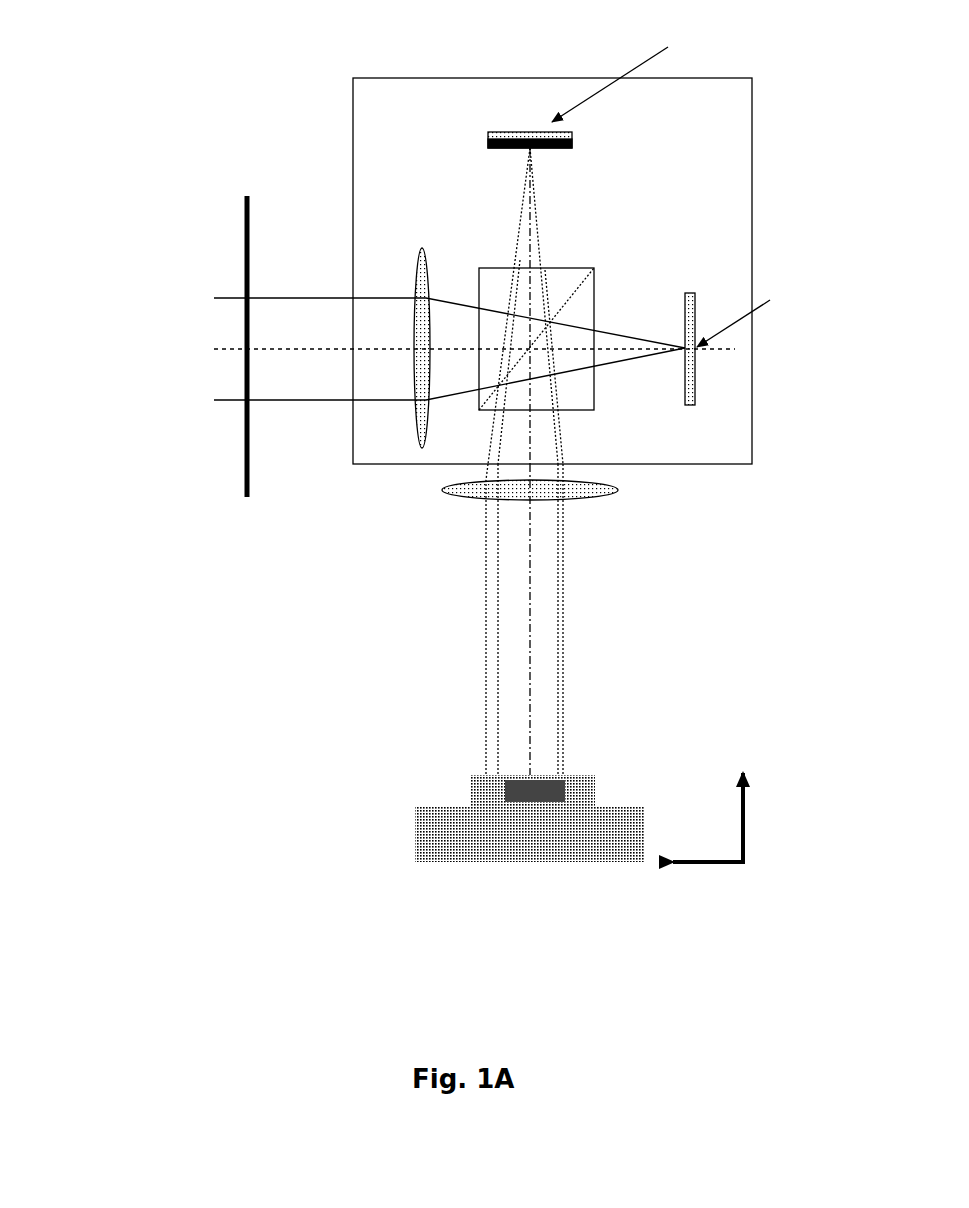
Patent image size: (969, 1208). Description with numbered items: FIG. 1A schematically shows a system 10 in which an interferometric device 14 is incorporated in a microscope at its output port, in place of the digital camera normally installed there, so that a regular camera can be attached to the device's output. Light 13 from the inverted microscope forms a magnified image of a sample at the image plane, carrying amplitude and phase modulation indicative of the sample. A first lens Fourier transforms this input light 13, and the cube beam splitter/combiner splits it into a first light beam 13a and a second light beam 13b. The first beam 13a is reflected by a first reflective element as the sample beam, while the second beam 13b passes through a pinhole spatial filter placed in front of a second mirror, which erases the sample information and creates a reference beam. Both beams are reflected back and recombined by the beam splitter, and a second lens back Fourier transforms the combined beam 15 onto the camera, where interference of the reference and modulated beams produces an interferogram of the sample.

The system 10 is at (222, 77).
The input light 13 is at (335, 405).
The first light beam 13a is at (560, 255).
The second light beam 13b is at (543, 207).
The interferometric device 14 is at (438, 77).
The combined beam 15 is at (573, 700).